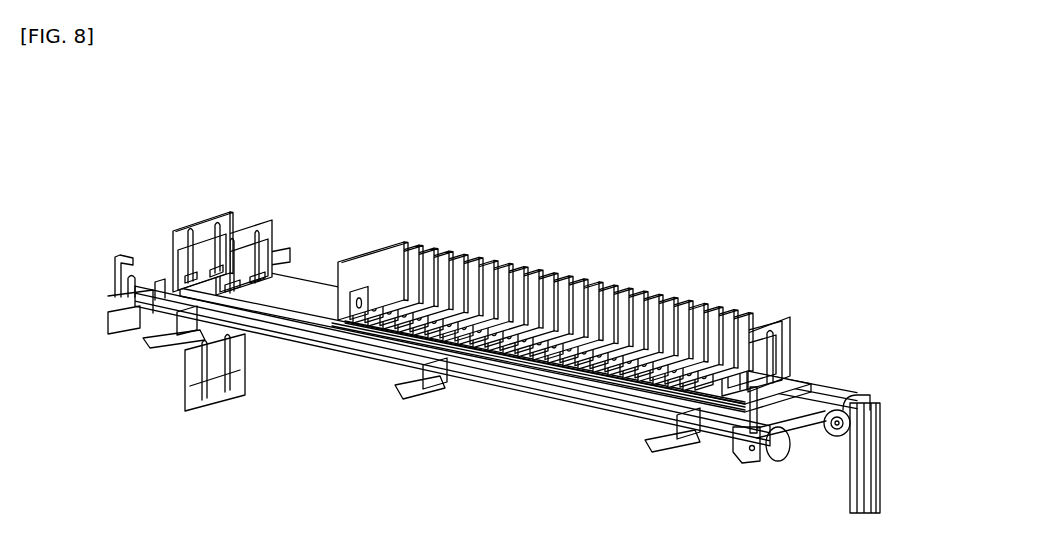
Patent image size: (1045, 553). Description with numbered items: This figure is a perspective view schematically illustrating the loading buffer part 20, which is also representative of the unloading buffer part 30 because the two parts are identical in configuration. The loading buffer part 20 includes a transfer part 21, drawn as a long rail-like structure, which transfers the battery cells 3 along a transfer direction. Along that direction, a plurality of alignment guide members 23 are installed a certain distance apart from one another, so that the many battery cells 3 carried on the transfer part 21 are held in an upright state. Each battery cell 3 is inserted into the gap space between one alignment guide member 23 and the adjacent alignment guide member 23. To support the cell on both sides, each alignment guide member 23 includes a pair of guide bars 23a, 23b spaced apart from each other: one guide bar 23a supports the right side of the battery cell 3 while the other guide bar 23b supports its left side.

The battery cell 3 is at (551, 280).
The loading buffer part 20 is at (519, 303).
The unloading buffer part 30 is at (519, 303).
The transfer part 21 is at (562, 405).
The alignment guide member 23 is at (826, 331).
The guide bar 23a is at (768, 335).
The guide bar 23b is at (746, 340).